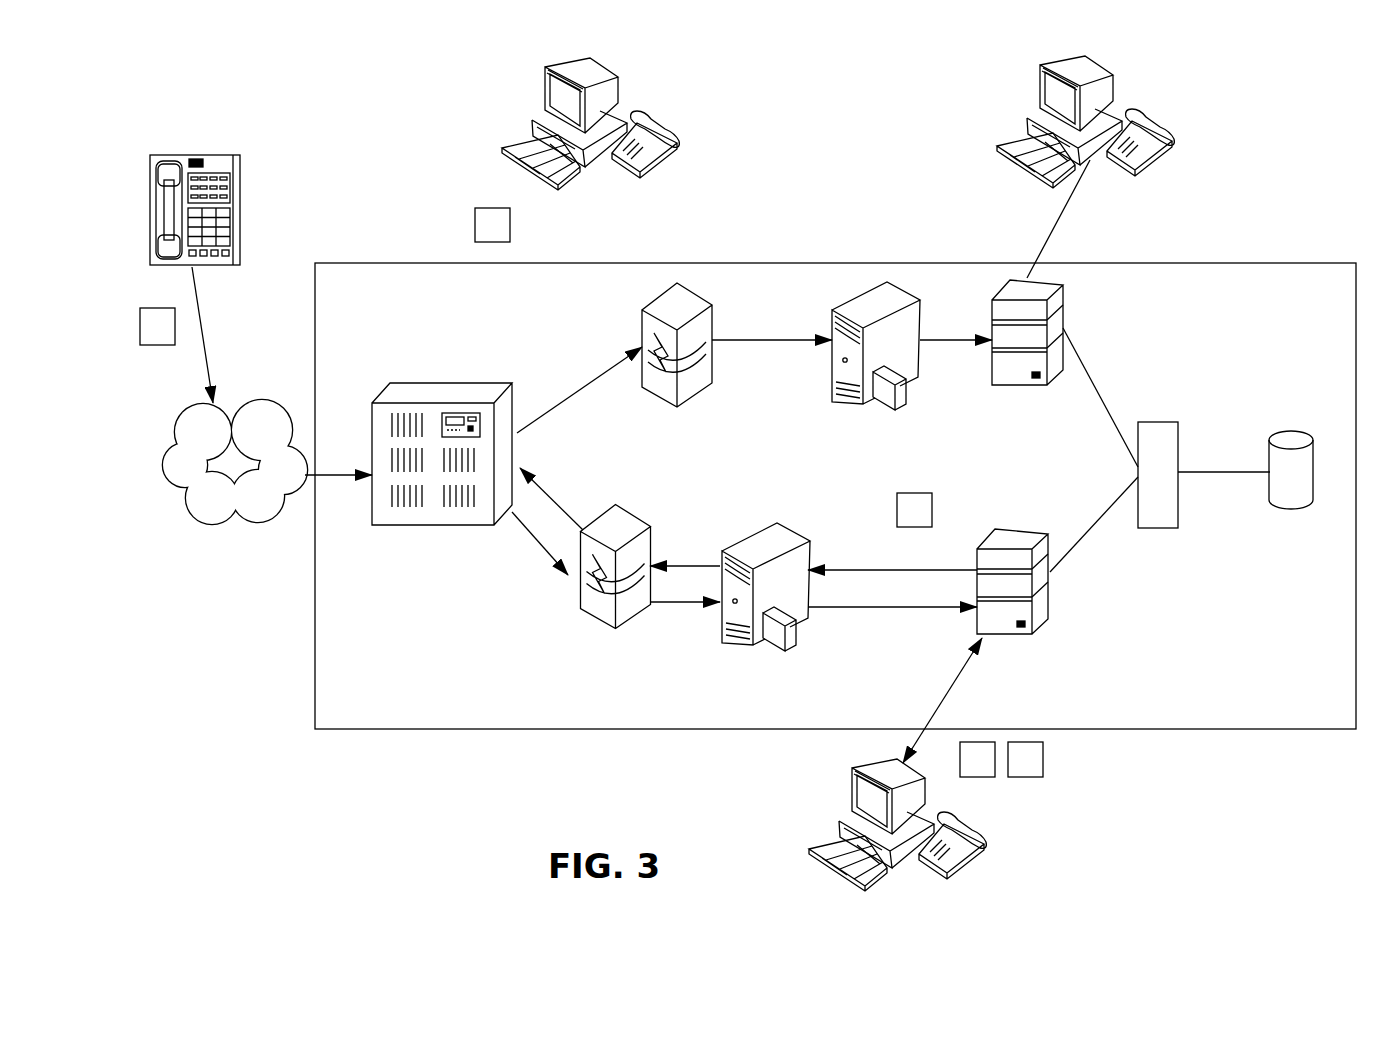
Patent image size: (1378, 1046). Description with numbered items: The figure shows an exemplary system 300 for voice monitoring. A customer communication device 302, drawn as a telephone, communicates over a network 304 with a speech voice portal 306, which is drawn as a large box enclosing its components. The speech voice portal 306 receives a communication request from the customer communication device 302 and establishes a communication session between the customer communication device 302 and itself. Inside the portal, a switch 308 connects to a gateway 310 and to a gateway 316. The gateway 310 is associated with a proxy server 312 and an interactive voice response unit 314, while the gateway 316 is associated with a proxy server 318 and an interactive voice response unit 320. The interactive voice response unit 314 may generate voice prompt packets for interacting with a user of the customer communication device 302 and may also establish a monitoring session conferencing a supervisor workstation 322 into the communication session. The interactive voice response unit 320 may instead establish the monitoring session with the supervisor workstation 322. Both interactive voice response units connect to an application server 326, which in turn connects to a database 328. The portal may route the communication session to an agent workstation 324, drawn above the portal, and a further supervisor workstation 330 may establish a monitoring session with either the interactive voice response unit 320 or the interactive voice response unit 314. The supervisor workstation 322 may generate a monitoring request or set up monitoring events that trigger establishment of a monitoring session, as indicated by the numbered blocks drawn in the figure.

The system 300 is at (230, 67).
The customer communication device 302 is at (243, 180).
The network 304 is at (235, 462).
The speech voice portal 306 is at (860, 262).
The switch 308 is at (442, 486).
The gateway 310 is at (615, 595).
The proxy server 312 is at (759, 626).
The interactive voice response unit 314 is at (1012, 611).
The gateway 316 is at (677, 372).
The proxy server 318 is at (878, 372).
The interactive voice response unit 320 is at (1027, 360).
The supervisor workstation 322 is at (840, 827).
The agent workstation 324 is at (603, 62).
The application server 326 is at (1160, 517).
The database 328 is at (1289, 499).
The supervisor workstation 330 is at (1098, 62).